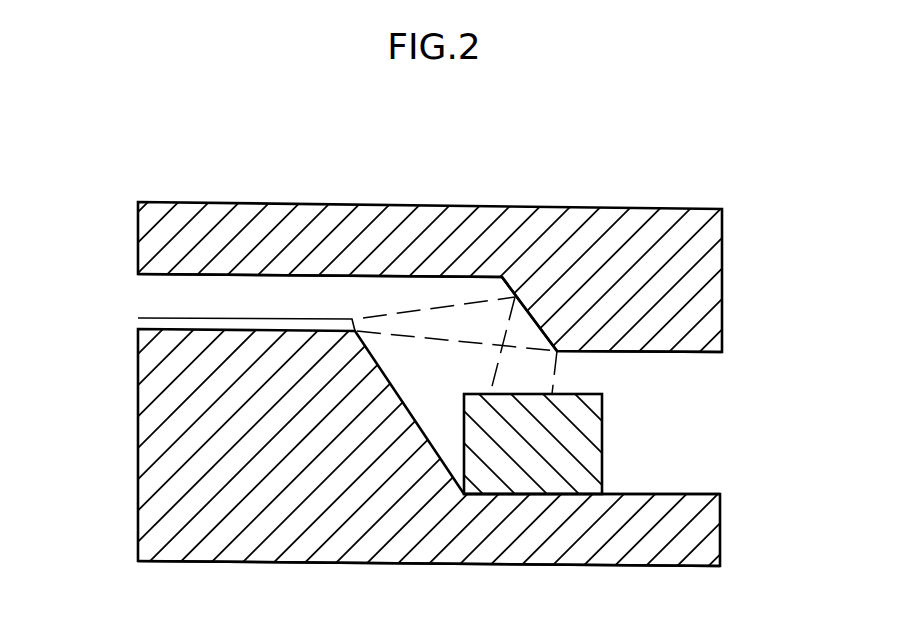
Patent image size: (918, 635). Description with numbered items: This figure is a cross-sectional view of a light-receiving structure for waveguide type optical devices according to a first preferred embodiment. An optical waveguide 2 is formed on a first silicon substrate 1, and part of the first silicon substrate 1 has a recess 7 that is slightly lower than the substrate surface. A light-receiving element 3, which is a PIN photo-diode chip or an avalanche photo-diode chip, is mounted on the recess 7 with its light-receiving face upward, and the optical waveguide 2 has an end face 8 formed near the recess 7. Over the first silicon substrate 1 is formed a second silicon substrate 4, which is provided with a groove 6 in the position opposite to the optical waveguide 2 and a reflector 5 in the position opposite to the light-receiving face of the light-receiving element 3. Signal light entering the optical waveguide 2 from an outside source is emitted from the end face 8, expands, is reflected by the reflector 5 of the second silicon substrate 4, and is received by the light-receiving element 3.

The first silicon substrate 1 is at (138, 507).
The optical waveguide 2 is at (138, 328).
The light-receiving element 3 is at (605, 445).
The second silicon substrate 4 is at (708, 248).
The reflector 5 is at (530, 330).
The groove 6 is at (193, 283).
The recess 7 is at (660, 495).
The end face 8 is at (364, 318).